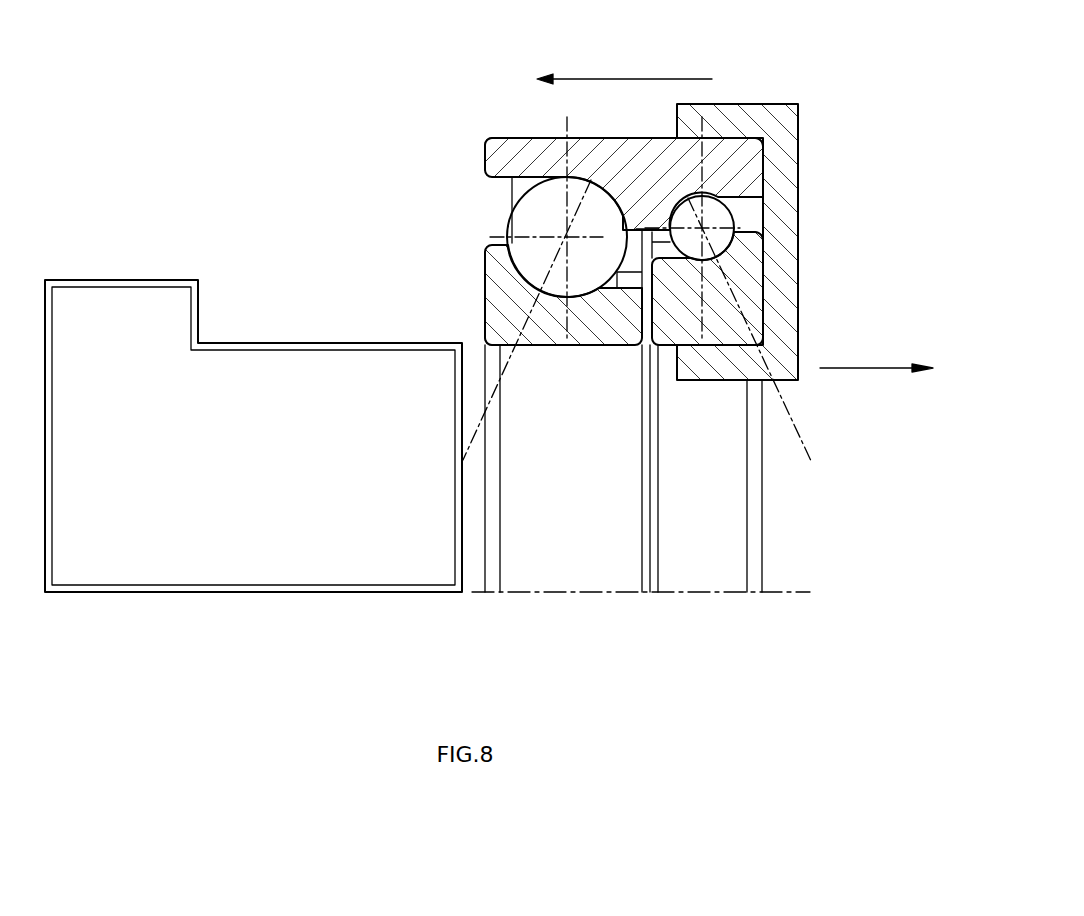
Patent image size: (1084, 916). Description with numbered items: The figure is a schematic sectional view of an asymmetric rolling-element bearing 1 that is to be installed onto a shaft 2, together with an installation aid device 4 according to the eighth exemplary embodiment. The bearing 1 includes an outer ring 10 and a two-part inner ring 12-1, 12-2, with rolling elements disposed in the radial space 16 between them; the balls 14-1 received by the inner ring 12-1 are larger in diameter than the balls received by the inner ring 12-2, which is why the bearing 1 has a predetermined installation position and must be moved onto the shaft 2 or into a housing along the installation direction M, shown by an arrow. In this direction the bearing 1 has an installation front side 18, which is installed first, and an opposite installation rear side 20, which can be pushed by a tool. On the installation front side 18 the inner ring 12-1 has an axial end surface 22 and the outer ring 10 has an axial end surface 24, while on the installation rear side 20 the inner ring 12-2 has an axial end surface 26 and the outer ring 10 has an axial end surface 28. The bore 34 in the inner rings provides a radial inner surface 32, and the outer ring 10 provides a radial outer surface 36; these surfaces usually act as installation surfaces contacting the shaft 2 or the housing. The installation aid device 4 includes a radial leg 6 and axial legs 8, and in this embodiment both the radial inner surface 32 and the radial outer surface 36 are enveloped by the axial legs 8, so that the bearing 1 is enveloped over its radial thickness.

The bearing 1 is at (712, 19).
The shaft 2 is at (118, 312).
The installation aid device 4 is at (835, 116).
The radial leg 6 is at (797, 285).
The axial leg 8 is at (742, 120).
The outer ring 10 is at (512, 152).
The inner ring 12-1 is at (492, 266).
The inner ring 12-2 is at (735, 322).
The rolling elements 14-1 is at (523, 225).
The radial space 16 is at (747, 213).
The installation front side 18 is at (420, 182).
The installation rear side 20 is at (880, 232).
The axial end surface 22 is at (485, 305).
The axial end surface 24 is at (485, 165).
The axial end surface 26 is at (762, 277).
The axial end surface 28 is at (765, 180).
The radial inner surface 32 is at (665, 348).
The bore 34 is at (715, 518).
The radial outer surface 36 is at (612, 138).
The installation direction M is at (612, 78).